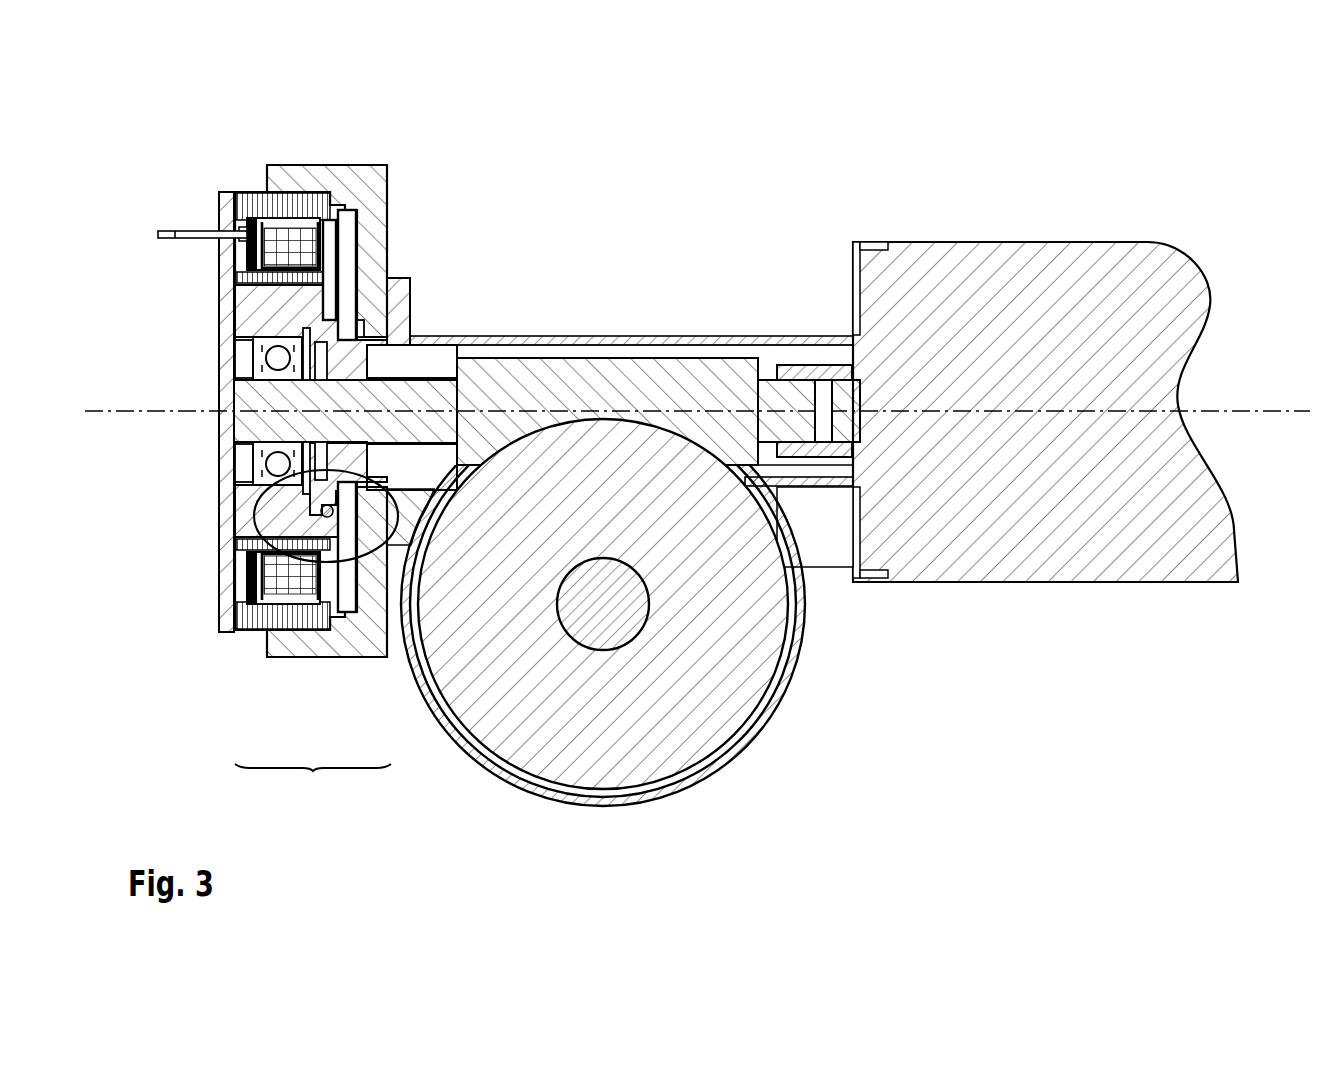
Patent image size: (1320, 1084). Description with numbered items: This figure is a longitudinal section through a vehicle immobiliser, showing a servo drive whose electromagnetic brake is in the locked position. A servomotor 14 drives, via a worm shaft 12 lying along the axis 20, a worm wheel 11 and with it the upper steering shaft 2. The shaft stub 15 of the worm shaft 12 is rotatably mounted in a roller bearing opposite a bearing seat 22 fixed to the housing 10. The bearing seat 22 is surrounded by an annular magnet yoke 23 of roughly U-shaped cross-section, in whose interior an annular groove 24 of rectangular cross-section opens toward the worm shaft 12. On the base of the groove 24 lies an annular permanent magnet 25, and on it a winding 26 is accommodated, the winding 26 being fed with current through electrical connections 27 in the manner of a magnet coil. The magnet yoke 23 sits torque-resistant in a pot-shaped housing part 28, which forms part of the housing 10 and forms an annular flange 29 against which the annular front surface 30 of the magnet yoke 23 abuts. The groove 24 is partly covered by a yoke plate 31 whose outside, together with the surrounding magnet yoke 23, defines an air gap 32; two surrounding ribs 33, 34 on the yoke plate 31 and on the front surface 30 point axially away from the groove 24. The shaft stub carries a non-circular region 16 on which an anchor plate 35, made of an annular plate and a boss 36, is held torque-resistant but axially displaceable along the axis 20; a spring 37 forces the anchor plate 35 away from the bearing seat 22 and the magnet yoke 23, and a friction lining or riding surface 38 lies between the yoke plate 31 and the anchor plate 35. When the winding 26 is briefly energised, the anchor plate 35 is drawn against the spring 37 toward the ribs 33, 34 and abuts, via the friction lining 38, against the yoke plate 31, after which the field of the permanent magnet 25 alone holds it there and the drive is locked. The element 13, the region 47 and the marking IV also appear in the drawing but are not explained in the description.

The upper steering shaft 2 is at (612, 612).
The housing 10 is at (788, 690).
The worm wheel 11 is at (570, 755).
The worm shaft 12 is at (578, 377).
The flange 13 is at (810, 363).
The servomotor 14 is at (1010, 262).
The shaft stub 15 is at (262, 405).
The non-circular region 16 is at (407, 393).
The axis 20 is at (1213, 410).
The bearing seat 22 is at (245, 318).
The magnet yoke 23 is at (260, 618).
The annular groove 24 is at (288, 590).
The permanent magnet 25 is at (240, 598).
The winding 26 is at (241, 232).
The electrical connections 27 is at (165, 233).
The pot-shaped housing part 28 is at (352, 178).
The annular flange 29 is at (329, 212).
The front surface 30 is at (337, 622).
The yoke plate 31 is at (318, 257).
The air gap 32 is at (322, 222).
The surrounding rib 33 is at (357, 210).
The surrounding rib 34 is at (360, 225).
The anchor plate 35 is at (345, 270).
The boss 36 is at (407, 320).
The spring 37 is at (326, 612).
The friction lining 38 is at (307, 293).
The brake module 47 is at (313, 789).
The detail IV is at (258, 528).